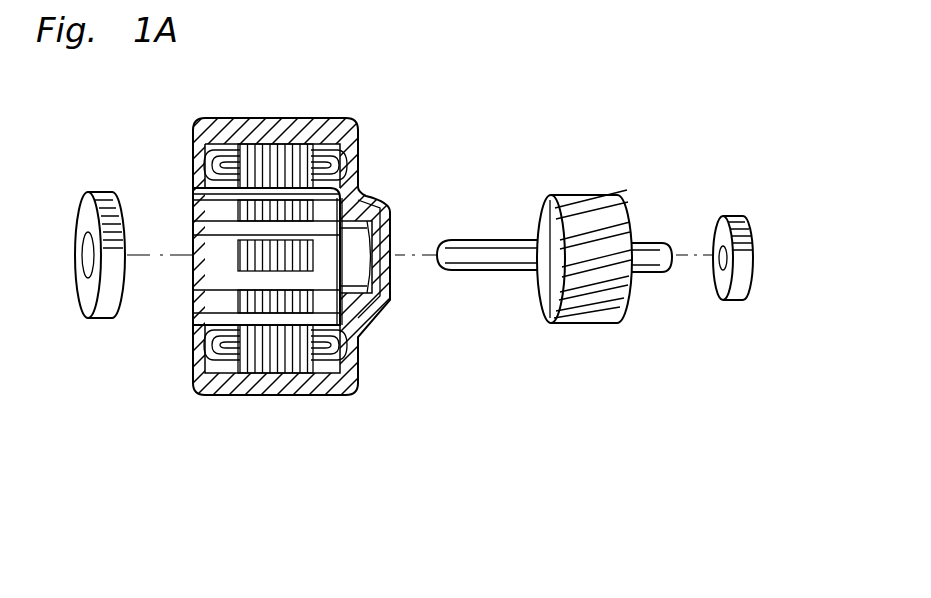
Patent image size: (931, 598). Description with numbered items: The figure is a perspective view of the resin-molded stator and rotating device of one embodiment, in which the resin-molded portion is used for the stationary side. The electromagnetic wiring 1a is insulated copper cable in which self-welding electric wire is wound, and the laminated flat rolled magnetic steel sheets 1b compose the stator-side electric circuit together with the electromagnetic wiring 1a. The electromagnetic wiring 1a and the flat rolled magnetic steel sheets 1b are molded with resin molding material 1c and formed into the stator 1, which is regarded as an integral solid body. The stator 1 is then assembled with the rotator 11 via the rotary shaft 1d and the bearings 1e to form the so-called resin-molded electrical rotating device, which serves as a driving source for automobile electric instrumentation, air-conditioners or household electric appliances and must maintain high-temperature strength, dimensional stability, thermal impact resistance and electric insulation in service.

The stator 1 is at (390, 475).
The electromagnetic wiring 1a is at (198, 383).
The flat rolled magnetic steel sheets 1b is at (273, 372).
The resin molding material 1c is at (340, 387).
The rotary shaft 1d is at (478, 238).
The bearing 1e is at (88, 192).
The rotator 11 is at (586, 323).